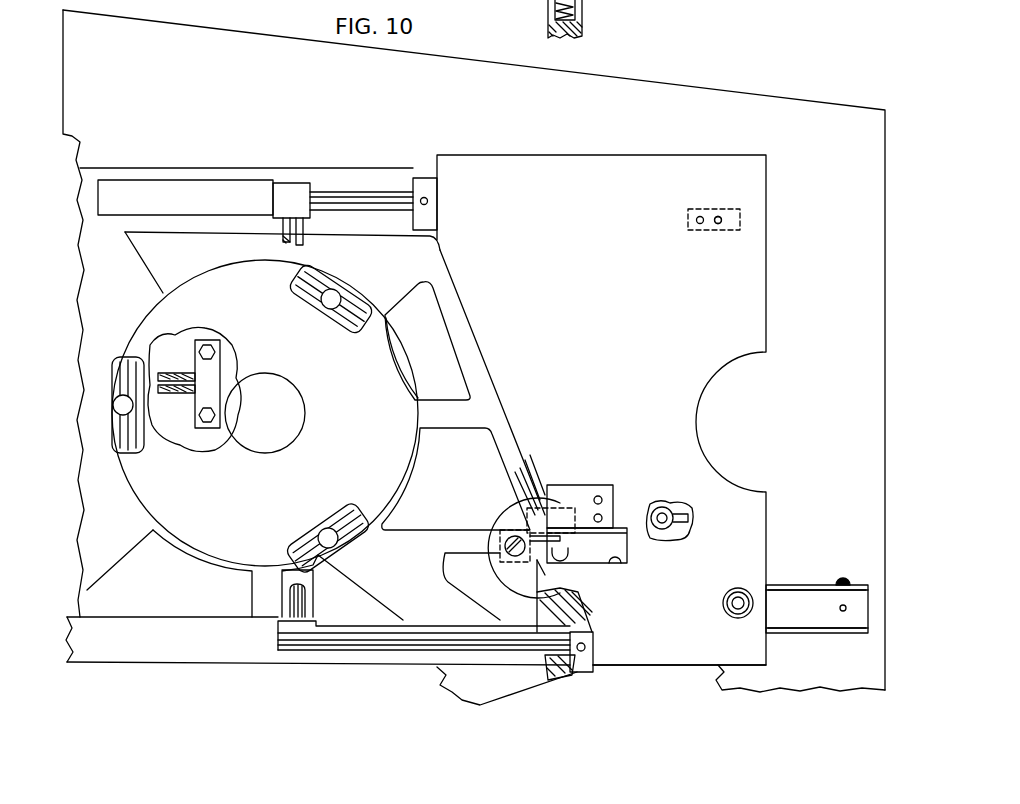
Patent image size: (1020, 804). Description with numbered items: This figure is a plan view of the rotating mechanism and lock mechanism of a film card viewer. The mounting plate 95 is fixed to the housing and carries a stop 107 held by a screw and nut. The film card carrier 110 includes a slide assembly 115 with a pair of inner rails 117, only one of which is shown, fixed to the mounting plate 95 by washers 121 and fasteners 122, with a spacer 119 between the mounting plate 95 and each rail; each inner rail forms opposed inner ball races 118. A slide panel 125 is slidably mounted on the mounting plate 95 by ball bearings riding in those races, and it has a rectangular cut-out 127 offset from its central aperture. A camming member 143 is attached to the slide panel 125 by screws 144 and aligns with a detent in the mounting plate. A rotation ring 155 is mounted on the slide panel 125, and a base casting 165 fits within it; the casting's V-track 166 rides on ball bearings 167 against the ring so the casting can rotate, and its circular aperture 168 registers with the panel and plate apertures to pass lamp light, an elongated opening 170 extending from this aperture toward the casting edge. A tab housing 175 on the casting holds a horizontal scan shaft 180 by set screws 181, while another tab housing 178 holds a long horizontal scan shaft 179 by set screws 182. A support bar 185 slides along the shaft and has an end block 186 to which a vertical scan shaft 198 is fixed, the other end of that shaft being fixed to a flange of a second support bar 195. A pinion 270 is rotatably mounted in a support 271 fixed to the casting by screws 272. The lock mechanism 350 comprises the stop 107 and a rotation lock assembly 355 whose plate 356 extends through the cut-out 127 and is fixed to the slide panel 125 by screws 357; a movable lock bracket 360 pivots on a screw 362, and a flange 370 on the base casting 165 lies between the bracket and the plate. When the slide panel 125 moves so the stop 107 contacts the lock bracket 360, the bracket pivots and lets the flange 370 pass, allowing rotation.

The mounting plate 95 is at (712, 106).
The film card carrier 110 is at (294, 173).
The support bar 185 is at (165, 200).
The end block 186 is at (300, 195).
The horizontal scan shaft 180 is at (345, 200).
The tab housing 175 is at (433, 192).
The set screws 181 is at (440, 204).
The slide panel 125 is at (632, 148).
The screws 144 is at (697, 220).
The camming member 143 is at (712, 232).
The base casting 165 is at (450, 251).
The rotation ring 155 is at (420, 362).
The circular aperture 168 is at (302, 420).
The elongated opening 170 is at (182, 370).
The pinion 270 is at (222, 378).
The support 271 is at (208, 392).
The screws 272 is at (210, 424).
The V-track 166 is at (140, 420).
The ball bearings 167 is at (330, 522).
The support bar 195 is at (175, 640).
The vertical scan shaft 198 is at (306, 600).
The long horizontal scan shaft 179 is at (490, 652).
The set screws 182 is at (586, 646).
The tab housing 178 is at (596, 670).
The lock mechanism 350 is at (560, 527).
The rotation lock assembly 355 is at (581, 480).
The screws 357 is at (603, 500).
The plate 356 is at (600, 530).
The rectangular cut-out 127 is at (622, 565).
The flange 370 is at (510, 532).
The lock bracket 360 is at (556, 512).
The screw 362 is at (545, 578).
The stop 107 is at (665, 512).
The slide assembly 115 is at (802, 570).
The spacer 119 is at (845, 580).
The fasteners 122 is at (839, 608).
The washers 121 is at (742, 588).
The inner rails 117 is at (780, 612).
The inner ball races 118 is at (826, 634).